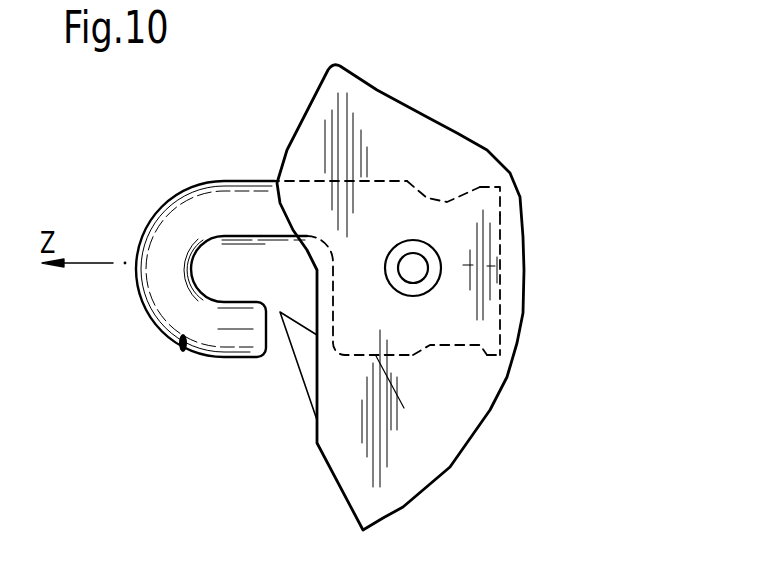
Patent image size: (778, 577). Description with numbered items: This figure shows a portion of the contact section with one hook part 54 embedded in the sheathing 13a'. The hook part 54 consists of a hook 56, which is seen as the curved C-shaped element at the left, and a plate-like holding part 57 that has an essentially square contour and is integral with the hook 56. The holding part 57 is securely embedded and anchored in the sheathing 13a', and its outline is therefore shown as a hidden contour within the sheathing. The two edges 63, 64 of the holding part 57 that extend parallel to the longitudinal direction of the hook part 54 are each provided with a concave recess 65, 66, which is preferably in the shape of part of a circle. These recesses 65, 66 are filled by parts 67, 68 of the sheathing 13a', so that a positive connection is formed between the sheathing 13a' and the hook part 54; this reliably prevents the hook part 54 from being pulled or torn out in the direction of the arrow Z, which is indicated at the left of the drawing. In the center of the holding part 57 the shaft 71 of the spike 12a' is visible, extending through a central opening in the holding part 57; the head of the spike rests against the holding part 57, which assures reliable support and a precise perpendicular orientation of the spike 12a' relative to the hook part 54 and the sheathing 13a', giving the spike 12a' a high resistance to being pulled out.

The hook part 54 is at (183, 350).
The hook 56 is at (185, 210).
The holding part 57 is at (463, 266).
The edge of the holding part 63 is at (440, 350).
The edge of the holding part 64 is at (312, 180).
The concave recess 65 is at (437, 345).
The concave recess 66 is at (433, 197).
The part of the sheathing 67 is at (503, 352).
The part of the sheathing 68 is at (463, 187).
The shaft 71 is at (432, 256).
The spike 12a' is at (511, 288).
The sheathing 13a' is at (400, 295).